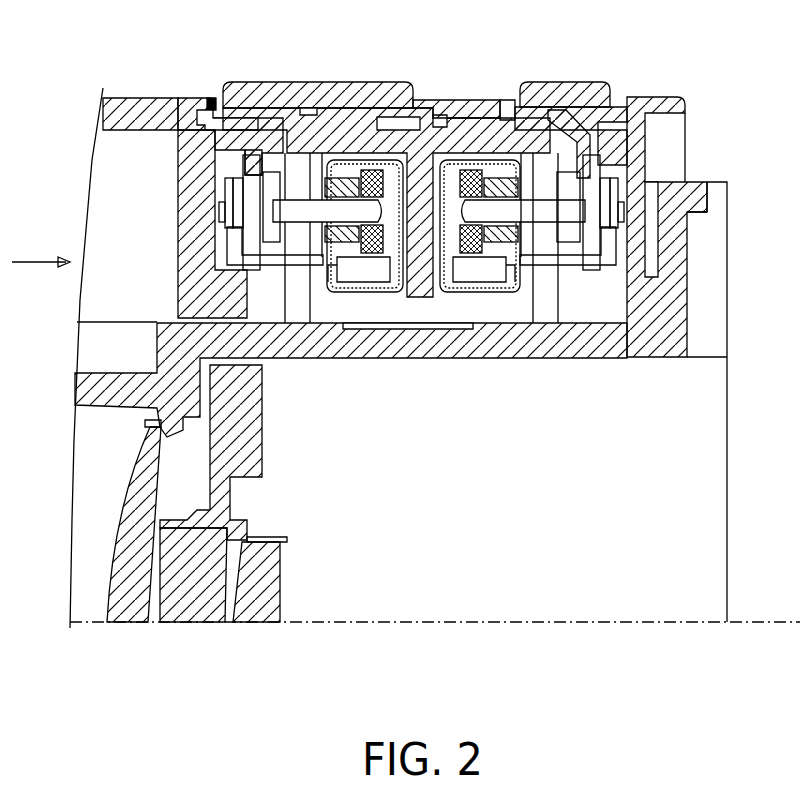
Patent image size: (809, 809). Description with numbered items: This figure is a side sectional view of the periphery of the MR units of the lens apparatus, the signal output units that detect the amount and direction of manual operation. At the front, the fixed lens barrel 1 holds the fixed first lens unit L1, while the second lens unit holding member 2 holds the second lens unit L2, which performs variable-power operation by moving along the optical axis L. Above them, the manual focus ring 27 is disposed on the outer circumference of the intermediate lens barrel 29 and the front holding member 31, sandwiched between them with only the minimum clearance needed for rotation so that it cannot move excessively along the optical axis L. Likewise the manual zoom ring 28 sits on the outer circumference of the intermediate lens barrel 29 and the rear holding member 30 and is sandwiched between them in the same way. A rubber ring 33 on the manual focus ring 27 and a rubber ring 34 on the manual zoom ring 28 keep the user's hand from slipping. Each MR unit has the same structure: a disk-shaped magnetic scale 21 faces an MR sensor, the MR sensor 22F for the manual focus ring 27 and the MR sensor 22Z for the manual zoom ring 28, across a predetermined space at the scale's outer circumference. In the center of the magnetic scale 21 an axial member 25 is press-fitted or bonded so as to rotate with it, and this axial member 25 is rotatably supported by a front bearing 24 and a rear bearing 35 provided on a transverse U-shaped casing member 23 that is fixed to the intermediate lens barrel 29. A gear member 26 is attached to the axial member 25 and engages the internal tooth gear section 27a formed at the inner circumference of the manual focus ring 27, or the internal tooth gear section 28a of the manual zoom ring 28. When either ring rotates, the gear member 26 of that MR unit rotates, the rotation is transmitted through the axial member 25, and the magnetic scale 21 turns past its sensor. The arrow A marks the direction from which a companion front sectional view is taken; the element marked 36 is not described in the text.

The fixed lens barrel 1 is at (160, 343).
The second lens unit holding member 2 is at (255, 420).
The magnetic scale 21 is at (428, 117).
The MR sensor 22F is at (247, 273).
The MR sensor 22Z is at (513, 270).
The casing member 23 is at (253, 259).
The front bearing 24 is at (225, 214).
The axial member 25 is at (242, 203).
The gear member 26 is at (273, 237).
The manual focus ring 27 is at (212, 98).
The internal tooth gear section 27a is at (262, 167).
The manual zoom ring 28 is at (507, 100).
The internal tooth gear section 28a is at (583, 162).
The intermediate lens barrel 29 is at (443, 100).
The rear holding member 30 is at (663, 100).
The front holding member 31 is at (112, 98).
The rubber ring 33 is at (250, 83).
The rubber ring 34 is at (570, 87).
The rear bearing 35 is at (342, 178).
The motor cover 36 is at (467, 297).
The arrow A is at (44, 258).
The optical axis L is at (535, 623).
The first lens unit L1 is at (113, 549).
The second lens unit L2 is at (273, 588).